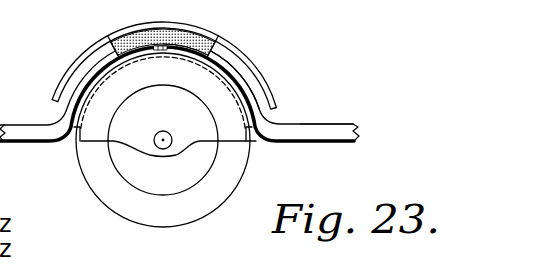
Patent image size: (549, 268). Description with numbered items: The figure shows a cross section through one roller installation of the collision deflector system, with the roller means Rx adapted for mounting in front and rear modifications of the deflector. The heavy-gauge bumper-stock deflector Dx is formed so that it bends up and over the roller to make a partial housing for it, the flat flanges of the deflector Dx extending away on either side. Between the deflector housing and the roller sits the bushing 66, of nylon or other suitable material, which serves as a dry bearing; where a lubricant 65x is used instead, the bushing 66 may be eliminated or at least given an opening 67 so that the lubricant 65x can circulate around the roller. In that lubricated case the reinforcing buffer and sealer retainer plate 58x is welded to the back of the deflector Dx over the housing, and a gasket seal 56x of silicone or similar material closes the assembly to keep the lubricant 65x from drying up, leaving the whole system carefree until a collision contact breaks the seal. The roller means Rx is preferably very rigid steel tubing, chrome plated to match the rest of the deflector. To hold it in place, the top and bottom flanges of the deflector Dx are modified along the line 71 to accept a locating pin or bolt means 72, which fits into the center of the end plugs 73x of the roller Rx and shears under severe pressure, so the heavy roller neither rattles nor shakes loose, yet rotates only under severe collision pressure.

The gasket seal 56x is at (255, 130).
The reinforcing buffer and sealer retainer plate 58x is at (75, 65).
The lubricant 65x is at (116, 42).
The bushing 66 is at (246, 98).
The opening 67 is at (165, 44).
The line 71 is at (222, 141).
The locating pin or bolt means 72 is at (157, 150).
The end plugs 73x is at (115, 171).
The roller means Rx is at (110, 208).
The heavy-gauge bumper-stock deflector Dx is at (311, 123).